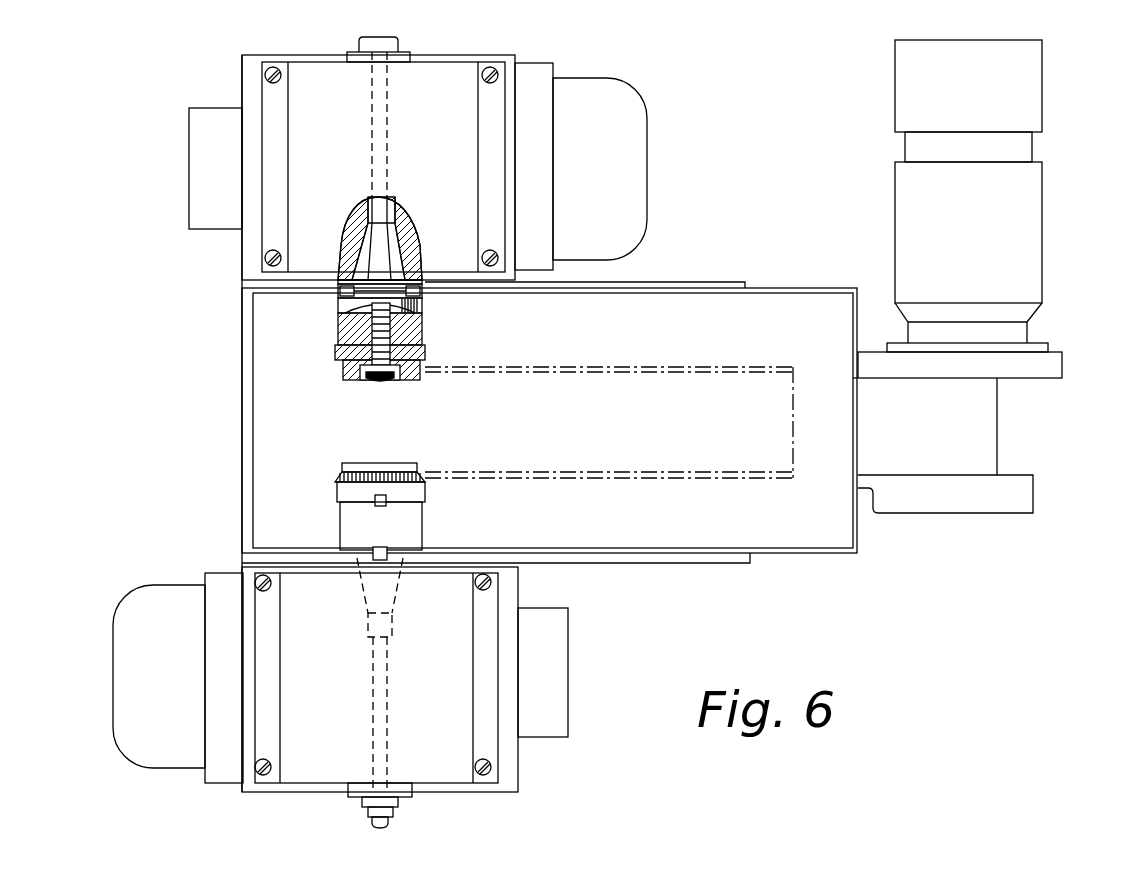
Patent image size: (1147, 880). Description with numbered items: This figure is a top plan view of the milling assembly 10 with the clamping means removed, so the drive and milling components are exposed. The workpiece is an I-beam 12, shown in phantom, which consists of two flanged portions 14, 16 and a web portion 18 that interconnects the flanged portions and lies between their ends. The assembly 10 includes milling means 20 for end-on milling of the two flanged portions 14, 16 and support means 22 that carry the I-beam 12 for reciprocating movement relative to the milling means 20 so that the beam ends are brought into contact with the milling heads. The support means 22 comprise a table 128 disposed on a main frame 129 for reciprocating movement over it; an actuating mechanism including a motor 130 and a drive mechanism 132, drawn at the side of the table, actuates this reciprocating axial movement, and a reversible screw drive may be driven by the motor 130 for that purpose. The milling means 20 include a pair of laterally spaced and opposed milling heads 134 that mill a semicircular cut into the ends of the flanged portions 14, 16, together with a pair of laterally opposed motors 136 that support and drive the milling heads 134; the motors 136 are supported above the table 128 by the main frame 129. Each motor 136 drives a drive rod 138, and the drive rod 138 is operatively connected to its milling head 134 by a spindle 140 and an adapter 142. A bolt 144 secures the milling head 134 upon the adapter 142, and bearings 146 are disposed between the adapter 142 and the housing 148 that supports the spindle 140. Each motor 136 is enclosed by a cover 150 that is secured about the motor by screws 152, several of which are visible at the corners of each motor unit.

The milling assembly 10 is at (624, 435).
The I-beam 12 is at (633, 429).
The flanged portion 14 is at (642, 473).
The flanged portion 16 is at (729, 366).
The web portion 18 is at (763, 413).
The milling means 20 is at (384, 413).
The support means 22 is at (797, 555).
The table 128 is at (835, 540).
The main frame 129 is at (703, 563).
The motor 130 is at (1013, 213).
The drive mechanism 132 is at (960, 426).
The milling head 134 is at (426, 379).
The motor 136 is at (578, 103).
The drive rod 138 is at (388, 135).
The spindle 140 is at (379, 252).
The adapter 142 is at (424, 330).
The bolt 144 is at (379, 383).
The bearings 146 is at (409, 301).
The housing 148 is at (401, 216).
The cover 150 is at (465, 158).
The screws 152 is at (265, 76).